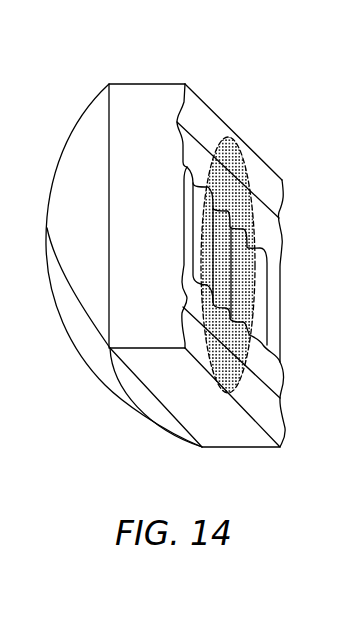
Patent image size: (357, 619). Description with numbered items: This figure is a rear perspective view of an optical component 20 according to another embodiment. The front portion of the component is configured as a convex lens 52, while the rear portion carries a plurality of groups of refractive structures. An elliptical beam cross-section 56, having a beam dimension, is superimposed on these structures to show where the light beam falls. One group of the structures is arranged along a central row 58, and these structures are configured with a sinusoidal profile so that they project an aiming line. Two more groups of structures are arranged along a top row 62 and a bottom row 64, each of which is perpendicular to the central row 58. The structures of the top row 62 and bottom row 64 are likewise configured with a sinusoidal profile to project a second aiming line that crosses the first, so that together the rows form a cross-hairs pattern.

The lens body 20 is at (155, 84).
The convex lens 52 is at (83, 175).
The elliptical beam cross-section 56 is at (240, 148).
The central row 58 is at (282, 329).
The top row 62 is at (263, 198).
The bottom row 64 is at (279, 392).